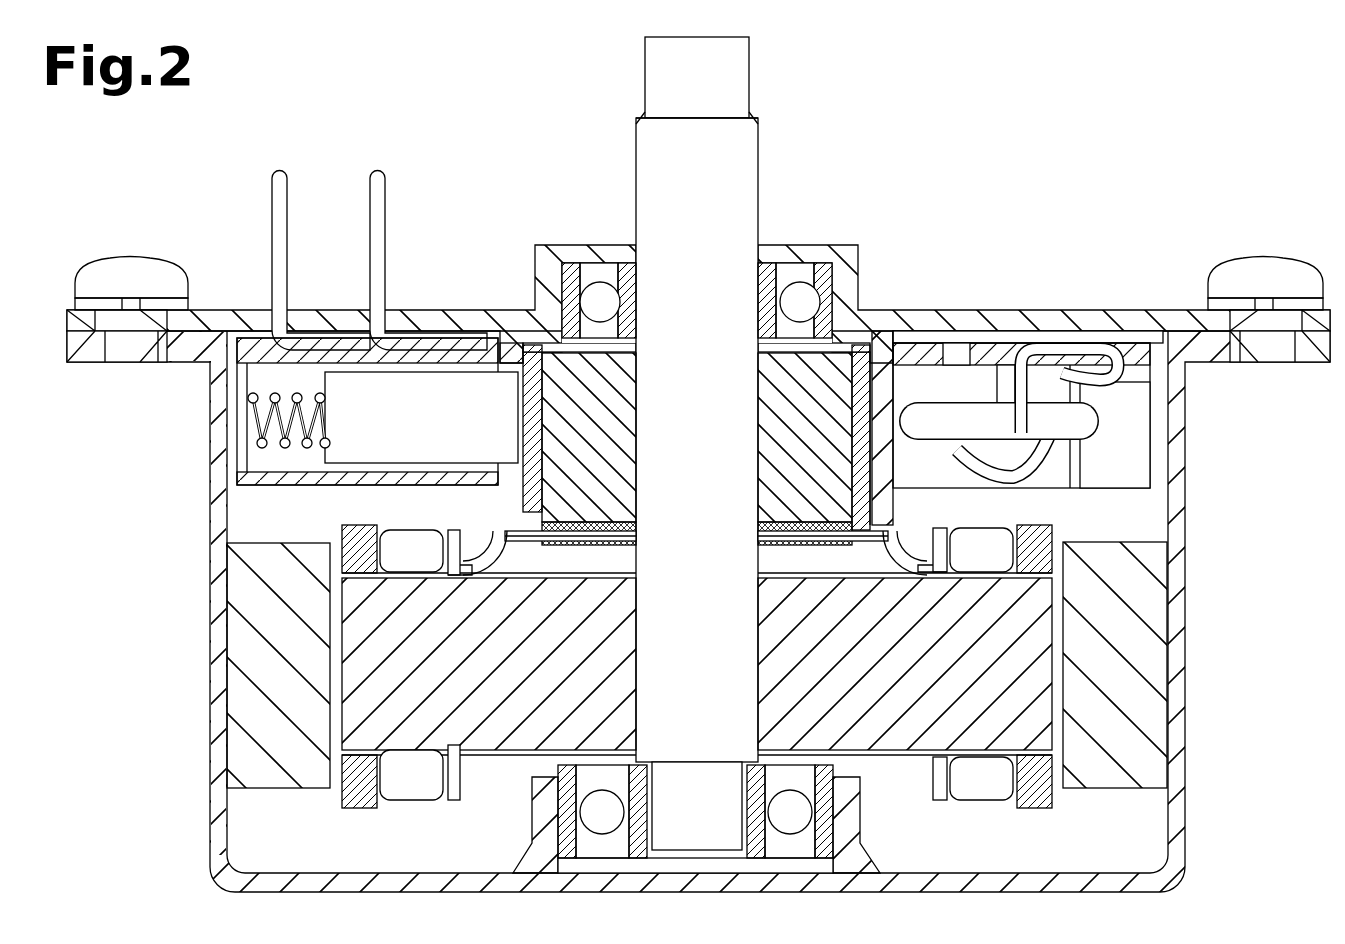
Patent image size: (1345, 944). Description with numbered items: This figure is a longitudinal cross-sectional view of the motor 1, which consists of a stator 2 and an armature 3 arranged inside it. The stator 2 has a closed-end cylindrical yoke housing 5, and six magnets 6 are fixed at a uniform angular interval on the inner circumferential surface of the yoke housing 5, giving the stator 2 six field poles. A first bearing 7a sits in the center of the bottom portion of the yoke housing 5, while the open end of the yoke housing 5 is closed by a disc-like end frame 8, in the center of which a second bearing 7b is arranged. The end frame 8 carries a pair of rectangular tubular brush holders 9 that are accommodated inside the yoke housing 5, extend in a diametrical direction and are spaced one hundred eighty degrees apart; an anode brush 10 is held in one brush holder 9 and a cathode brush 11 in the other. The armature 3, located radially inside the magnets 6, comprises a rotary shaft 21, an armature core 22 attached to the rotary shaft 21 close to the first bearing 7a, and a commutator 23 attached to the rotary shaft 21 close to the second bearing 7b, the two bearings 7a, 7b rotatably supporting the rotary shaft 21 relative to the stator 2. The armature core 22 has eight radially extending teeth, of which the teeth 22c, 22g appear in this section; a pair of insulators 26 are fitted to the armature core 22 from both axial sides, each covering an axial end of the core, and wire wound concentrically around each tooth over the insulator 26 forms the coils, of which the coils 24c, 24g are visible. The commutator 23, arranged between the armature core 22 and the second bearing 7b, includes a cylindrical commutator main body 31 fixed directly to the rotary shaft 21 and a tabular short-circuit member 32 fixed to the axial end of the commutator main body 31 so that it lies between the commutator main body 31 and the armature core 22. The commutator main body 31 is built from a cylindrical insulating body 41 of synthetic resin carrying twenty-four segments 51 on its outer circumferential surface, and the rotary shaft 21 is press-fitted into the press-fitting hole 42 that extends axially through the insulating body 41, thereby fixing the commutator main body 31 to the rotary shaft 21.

The motor 1 is at (1256, 530).
The stator 2 is at (1201, 548).
The armature 3 is at (1067, 610).
The yoke housing 5 is at (1186, 726).
The magnets 6 is at (238, 641).
The first bearing 7a is at (557, 834).
The second bearing 7b is at (549, 270).
The end frame 8 is at (1083, 312).
The brush holders 9 is at (250, 482).
The anode brush 10 is at (888, 455).
The cathode brush 11 is at (470, 380).
The rotary shaft 21 is at (762, 170).
The armature core 22 is at (1053, 672).
The tooth 22c is at (980, 622).
The tooth 22g is at (405, 688).
The commutator 23 is at (880, 320).
The coil 24c is at (977, 530).
The coil 24g is at (416, 530).
The insulators 26 is at (995, 556).
The commutator main body 31 is at (876, 392).
The short-circuit member 32 is at (792, 550).
The insulating body 41 is at (624, 430).
The press-fitting hole 42 is at (745, 412).
The segments 51 is at (528, 422).